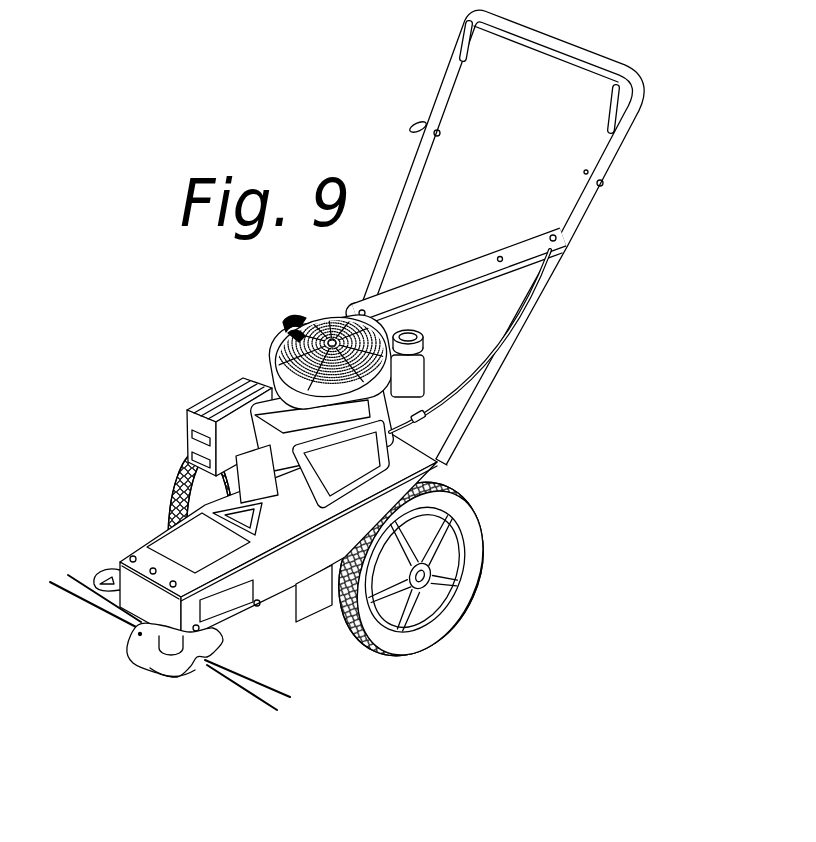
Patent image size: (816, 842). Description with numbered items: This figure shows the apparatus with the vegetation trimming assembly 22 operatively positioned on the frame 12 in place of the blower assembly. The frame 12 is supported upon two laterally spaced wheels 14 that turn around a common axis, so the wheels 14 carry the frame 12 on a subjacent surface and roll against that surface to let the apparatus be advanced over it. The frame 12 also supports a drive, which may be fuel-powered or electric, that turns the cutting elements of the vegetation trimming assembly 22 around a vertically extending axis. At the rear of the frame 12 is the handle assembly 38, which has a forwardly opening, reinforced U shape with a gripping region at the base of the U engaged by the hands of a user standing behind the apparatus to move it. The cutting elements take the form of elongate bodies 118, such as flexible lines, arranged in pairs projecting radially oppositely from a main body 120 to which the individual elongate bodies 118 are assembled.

The frame 12 is at (180, 540).
The wheel 14 is at (183, 467).
The vegetation trimming assembly 22 is at (219, 678).
The handle assembly 38 is at (592, 212).
The elongate body 118 is at (273, 682).
The main body 120 is at (143, 653).